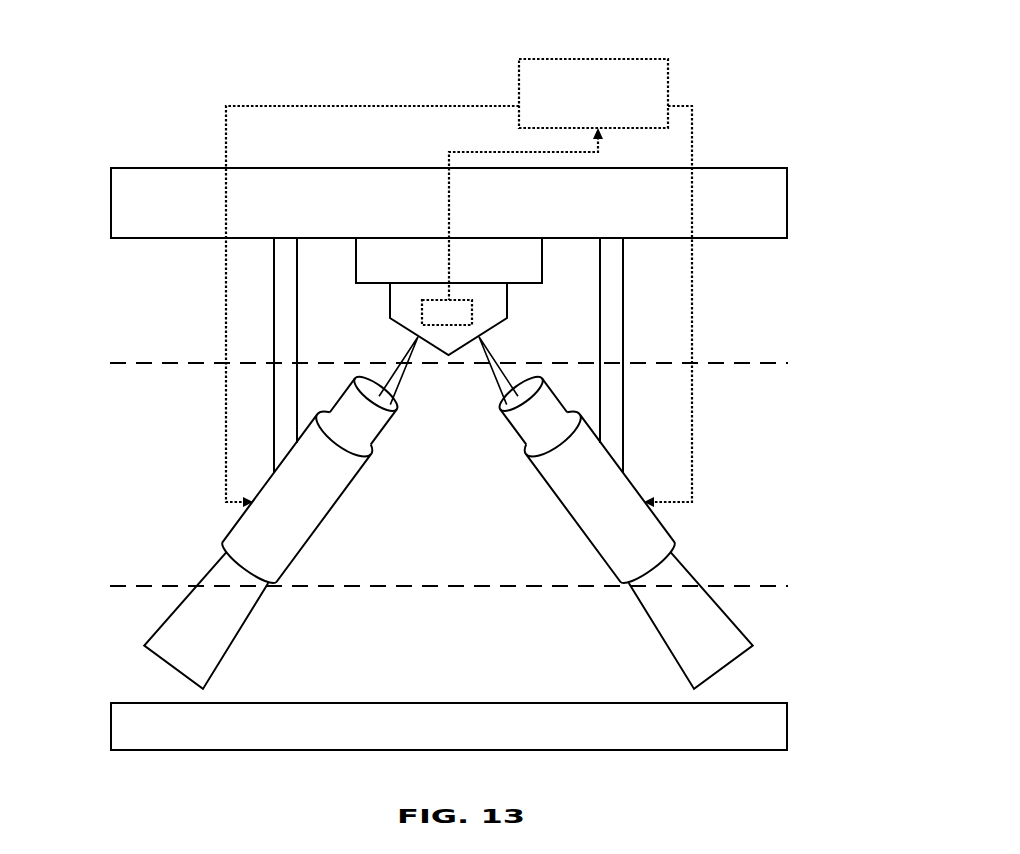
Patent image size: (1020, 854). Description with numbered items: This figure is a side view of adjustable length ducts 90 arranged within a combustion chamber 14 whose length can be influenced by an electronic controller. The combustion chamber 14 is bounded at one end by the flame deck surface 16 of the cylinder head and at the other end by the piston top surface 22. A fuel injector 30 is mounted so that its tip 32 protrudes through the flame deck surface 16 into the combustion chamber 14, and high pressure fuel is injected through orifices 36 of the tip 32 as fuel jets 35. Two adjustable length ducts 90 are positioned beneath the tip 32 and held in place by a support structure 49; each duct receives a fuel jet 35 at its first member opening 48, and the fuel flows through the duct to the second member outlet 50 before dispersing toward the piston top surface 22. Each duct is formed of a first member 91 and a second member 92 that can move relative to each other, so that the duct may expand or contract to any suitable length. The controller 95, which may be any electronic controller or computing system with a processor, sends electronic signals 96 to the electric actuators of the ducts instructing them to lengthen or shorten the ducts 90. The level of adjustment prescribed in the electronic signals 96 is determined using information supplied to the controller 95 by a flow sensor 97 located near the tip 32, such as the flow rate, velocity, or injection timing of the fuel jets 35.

The combustion chamber 14 is at (137, 310).
The flame deck surface 16 is at (667, 238).
The piston top surface 22 is at (435, 703).
The fuel injector 30 is at (435, 262).
The tip 32 is at (485, 308).
The fuel jets 35 is at (195, 652).
The orifices 36 is at (418, 337).
The first member openings 48 is at (387, 402).
The support structure 49 is at (274, 332).
The second member outlets 50 is at (242, 565).
The adjustable length ducts 90 is at (737, 448).
The first member 91 is at (352, 408).
The second member 92 is at (308, 493).
The controller 95 is at (644, 58).
The electronic signals 96 is at (225, 408).
The flow sensor 97 is at (423, 302).